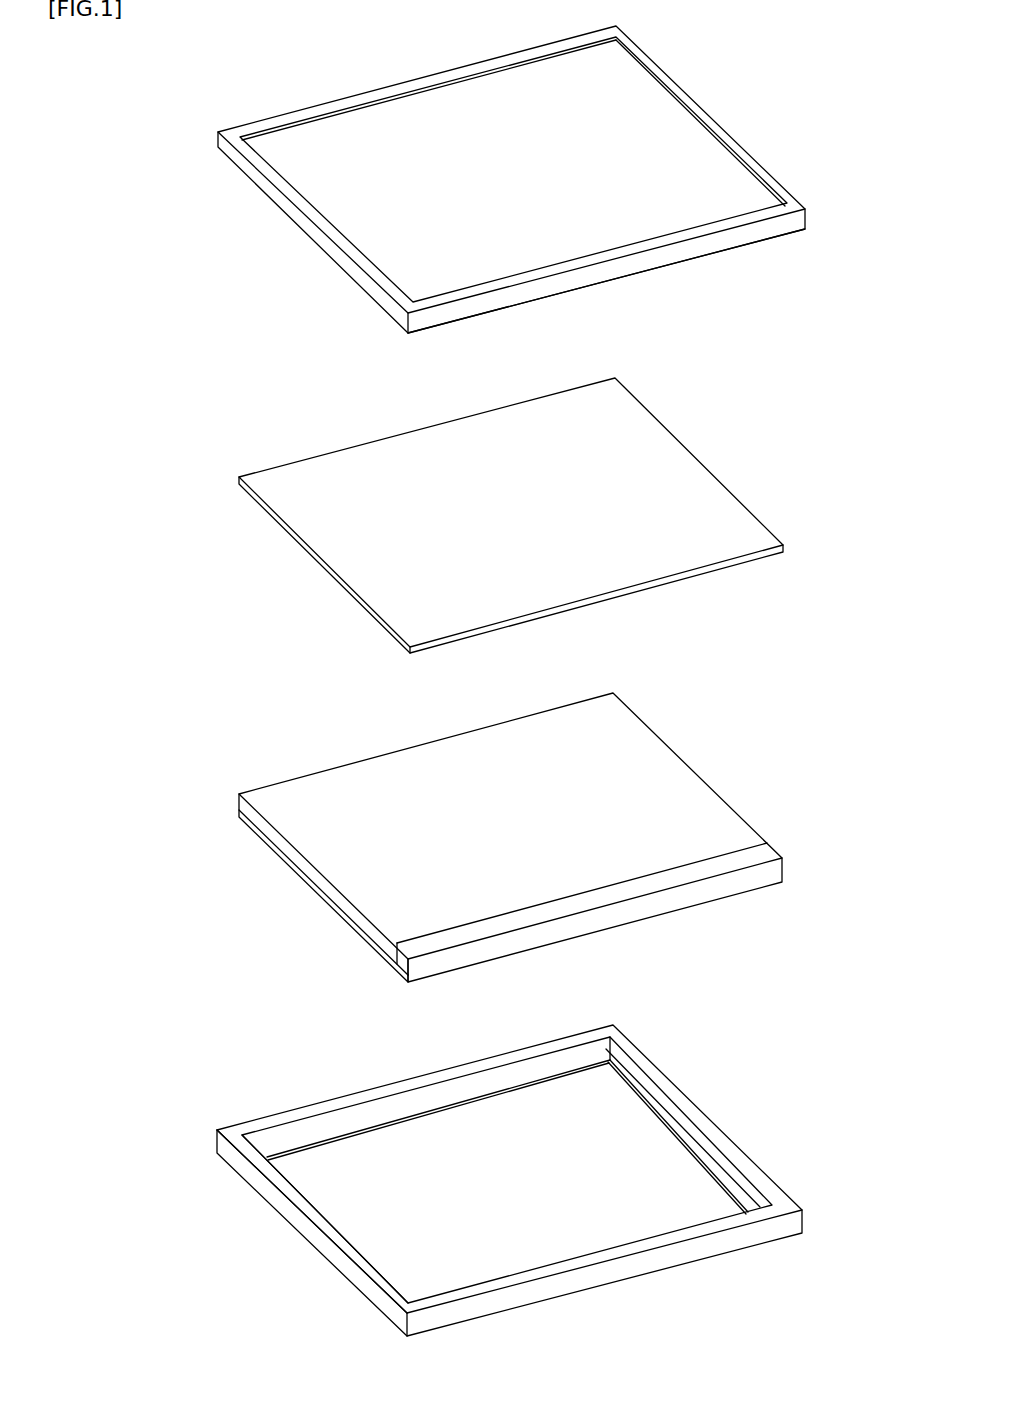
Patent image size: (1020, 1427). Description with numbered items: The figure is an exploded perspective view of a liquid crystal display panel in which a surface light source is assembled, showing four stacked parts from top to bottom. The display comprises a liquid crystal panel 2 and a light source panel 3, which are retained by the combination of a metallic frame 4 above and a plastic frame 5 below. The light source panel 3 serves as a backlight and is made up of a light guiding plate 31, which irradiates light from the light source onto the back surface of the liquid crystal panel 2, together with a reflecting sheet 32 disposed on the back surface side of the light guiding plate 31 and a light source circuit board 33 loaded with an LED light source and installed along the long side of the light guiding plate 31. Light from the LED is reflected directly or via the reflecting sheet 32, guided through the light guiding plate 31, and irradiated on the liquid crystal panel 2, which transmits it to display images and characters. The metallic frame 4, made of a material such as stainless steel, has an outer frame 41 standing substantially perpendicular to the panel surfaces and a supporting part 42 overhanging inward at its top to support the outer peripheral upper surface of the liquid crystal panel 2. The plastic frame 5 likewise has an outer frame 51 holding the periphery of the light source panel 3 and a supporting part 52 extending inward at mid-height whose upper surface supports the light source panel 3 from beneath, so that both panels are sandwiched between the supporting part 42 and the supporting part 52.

The liquid crystal panel 2 is at (712, 472).
The light source panel 3 is at (532, 837).
The light guiding plate 31 is at (280, 839).
The reflecting sheet 32 is at (352, 926).
The light source circuit board 33 is at (773, 872).
The metallic frame 4 is at (514, 179).
The outer frame 41 is at (668, 257).
The supporting part 42 is at (618, 247).
The plastic frame 5 is at (509, 1180).
The outer frame 51 is at (337, 1238).
The supporting part 52 is at (427, 1118).